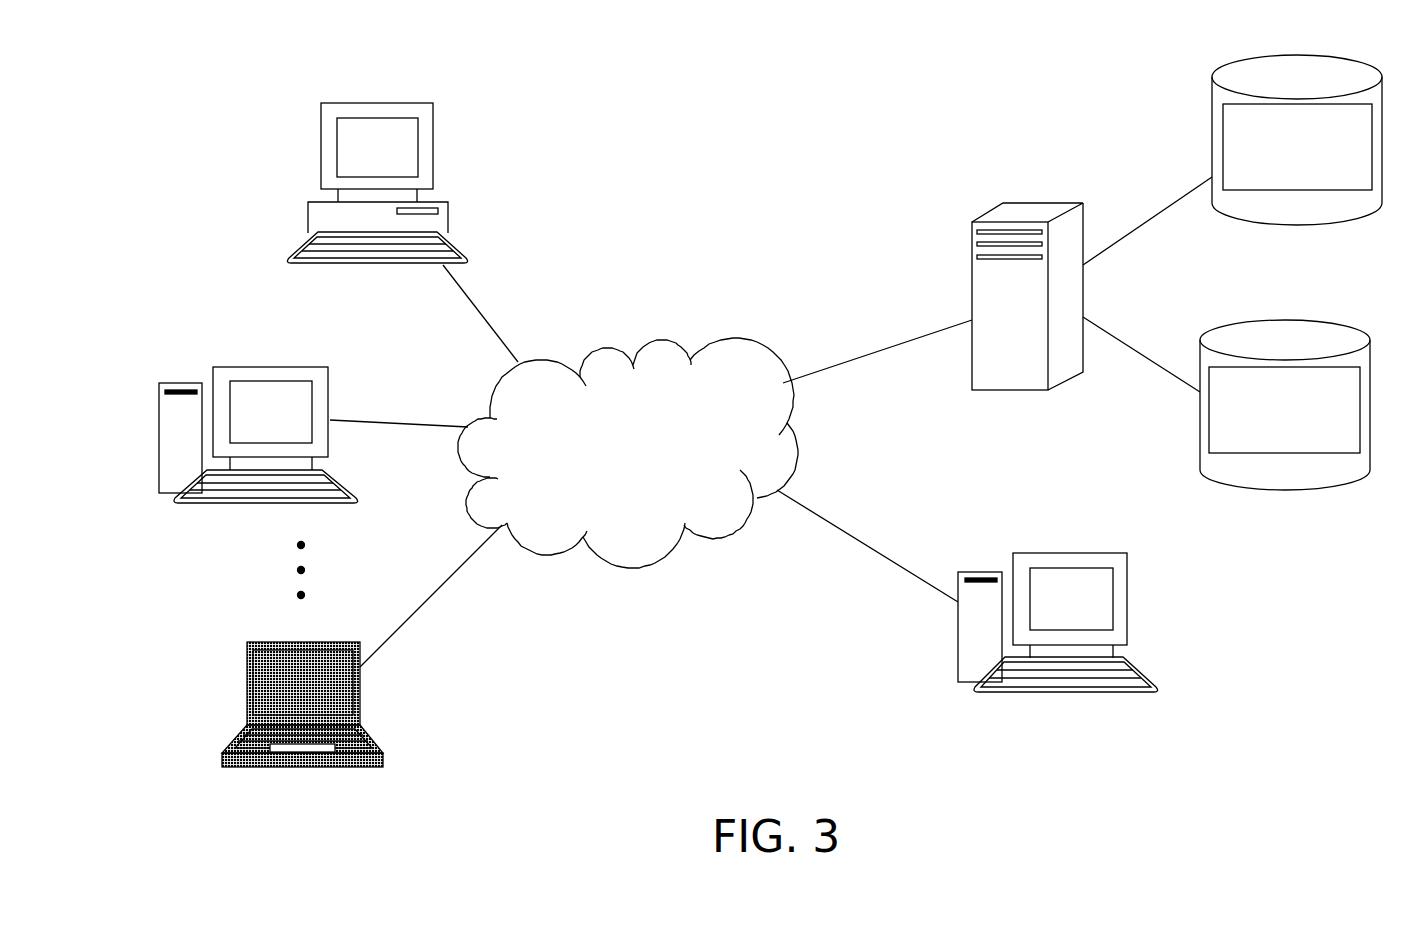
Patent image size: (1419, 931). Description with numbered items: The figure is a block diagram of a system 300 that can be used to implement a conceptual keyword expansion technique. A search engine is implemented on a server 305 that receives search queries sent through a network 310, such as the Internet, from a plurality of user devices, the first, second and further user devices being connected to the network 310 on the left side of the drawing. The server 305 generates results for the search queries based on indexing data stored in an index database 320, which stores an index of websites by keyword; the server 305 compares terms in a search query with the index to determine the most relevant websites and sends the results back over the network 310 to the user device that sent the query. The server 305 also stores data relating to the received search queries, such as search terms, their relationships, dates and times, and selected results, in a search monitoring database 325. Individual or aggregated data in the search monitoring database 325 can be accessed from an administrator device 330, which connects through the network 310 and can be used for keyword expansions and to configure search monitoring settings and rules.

The system 300 is at (812, 128).
The server 305 is at (1065, 203).
The network 310 is at (677, 340).
The index database 320 is at (1288, 57).
The search monitoring database 325 is at (1275, 317).
The administrator device 330 is at (1113, 553).